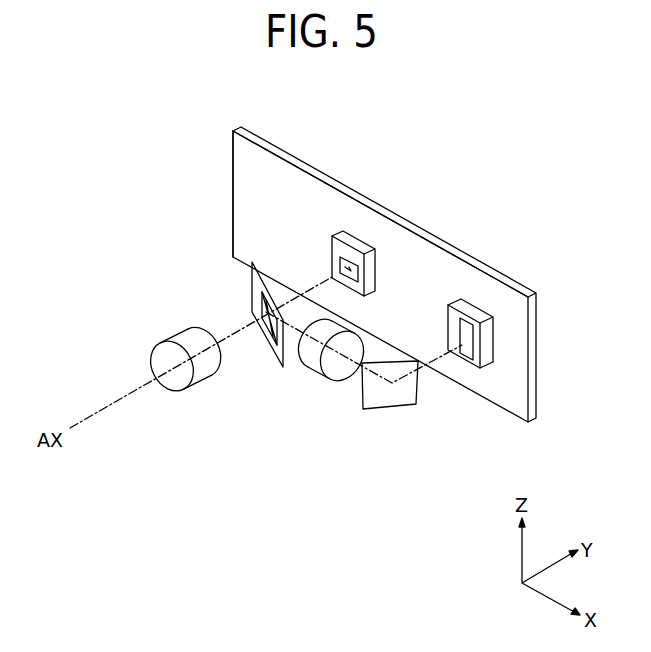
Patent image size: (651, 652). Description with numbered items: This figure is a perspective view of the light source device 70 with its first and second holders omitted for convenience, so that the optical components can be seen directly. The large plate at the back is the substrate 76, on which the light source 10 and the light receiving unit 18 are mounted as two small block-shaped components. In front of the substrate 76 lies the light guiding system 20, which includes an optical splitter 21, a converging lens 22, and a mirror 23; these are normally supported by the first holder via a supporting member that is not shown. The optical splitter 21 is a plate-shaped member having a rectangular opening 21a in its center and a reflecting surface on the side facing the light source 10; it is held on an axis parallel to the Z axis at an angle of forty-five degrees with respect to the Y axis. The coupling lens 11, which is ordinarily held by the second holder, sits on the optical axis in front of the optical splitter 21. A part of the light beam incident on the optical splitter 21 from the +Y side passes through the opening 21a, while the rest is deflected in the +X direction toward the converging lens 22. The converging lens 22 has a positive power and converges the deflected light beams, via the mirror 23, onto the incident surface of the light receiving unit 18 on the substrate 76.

The light source 10 is at (352, 233).
The coupling lens 11 is at (176, 340).
The light receiving unit 18 is at (479, 305).
The light guiding system 20 is at (372, 430).
The optical splitter 21 is at (250, 284).
The rectangular opening 21a is at (266, 345).
The converging lens 22 is at (332, 384).
The mirror 23 is at (418, 396).
The light source device 70 is at (461, 139).
The substrate 76 is at (240, 128).